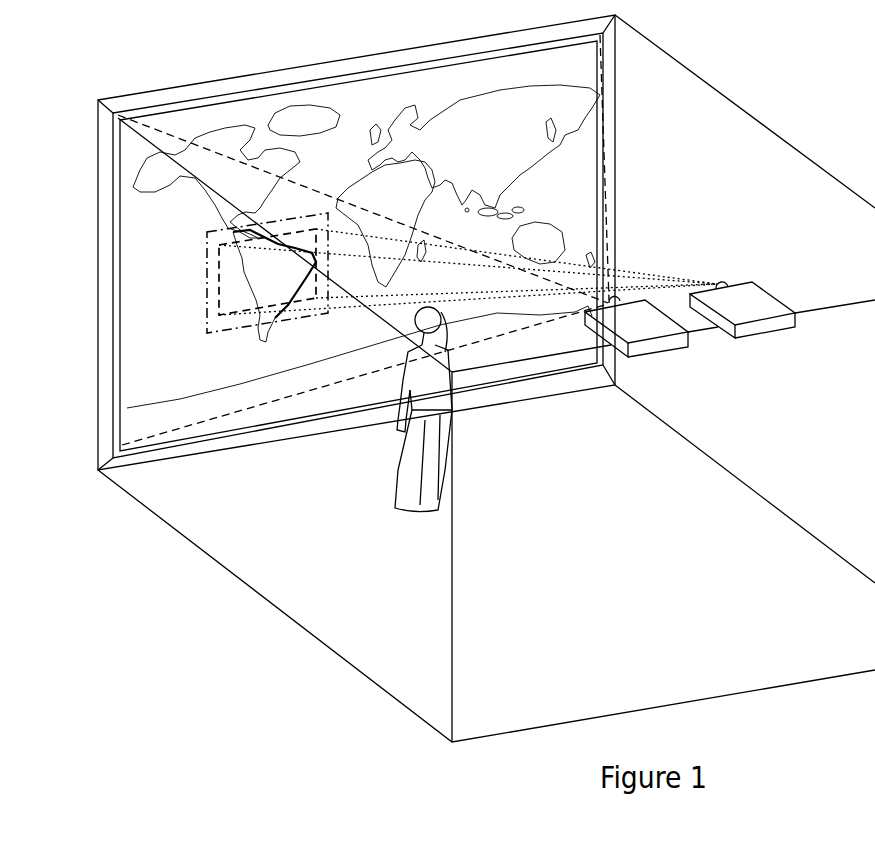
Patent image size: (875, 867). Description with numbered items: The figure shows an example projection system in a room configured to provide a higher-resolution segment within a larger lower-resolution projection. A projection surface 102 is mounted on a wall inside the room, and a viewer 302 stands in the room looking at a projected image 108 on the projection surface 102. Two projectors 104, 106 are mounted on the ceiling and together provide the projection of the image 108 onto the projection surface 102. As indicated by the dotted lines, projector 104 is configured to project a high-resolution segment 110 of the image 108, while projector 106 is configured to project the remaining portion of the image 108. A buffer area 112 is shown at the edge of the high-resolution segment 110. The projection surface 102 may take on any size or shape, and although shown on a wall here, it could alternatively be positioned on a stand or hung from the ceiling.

The projection surface 102 is at (604, 88).
The projector 104 is at (770, 335).
The projector 106 is at (660, 350).
The projected image 108 is at (586, 163).
The high-resolution segment 110 is at (219, 268).
The buffer area 112 is at (310, 211).
The viewer 302 is at (432, 470).